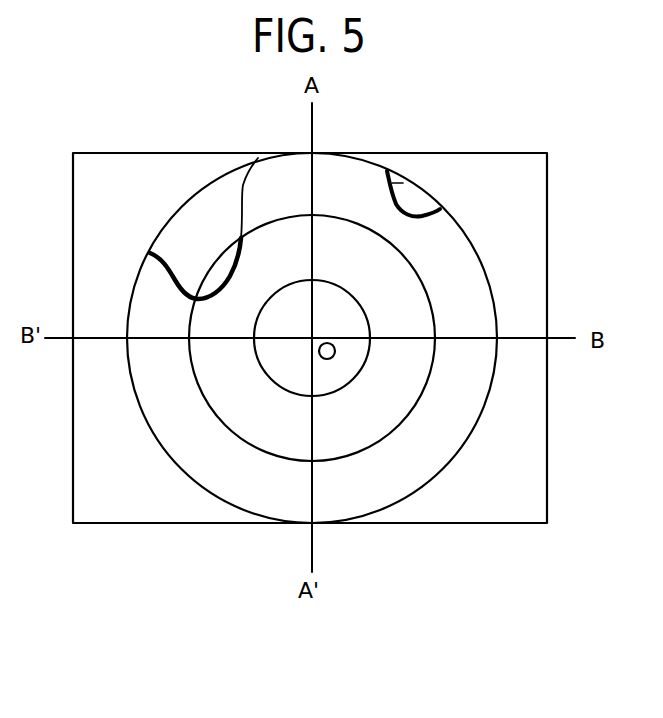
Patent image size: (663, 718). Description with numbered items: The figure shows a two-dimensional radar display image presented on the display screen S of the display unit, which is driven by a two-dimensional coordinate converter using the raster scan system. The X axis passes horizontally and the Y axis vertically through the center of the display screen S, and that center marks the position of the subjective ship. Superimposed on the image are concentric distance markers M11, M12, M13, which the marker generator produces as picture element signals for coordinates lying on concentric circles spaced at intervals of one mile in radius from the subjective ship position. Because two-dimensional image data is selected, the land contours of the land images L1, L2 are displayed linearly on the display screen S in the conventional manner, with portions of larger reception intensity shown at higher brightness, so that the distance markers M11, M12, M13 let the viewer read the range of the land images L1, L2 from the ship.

The display screen S is at (510, 191).
The concentric distance marker M13 is at (443, 470).
The concentric distance marker M12 is at (397, 428).
The concentric distance marker M11 is at (348, 386).
The land image L1 is at (240, 190).
The land image L2 is at (387, 171).